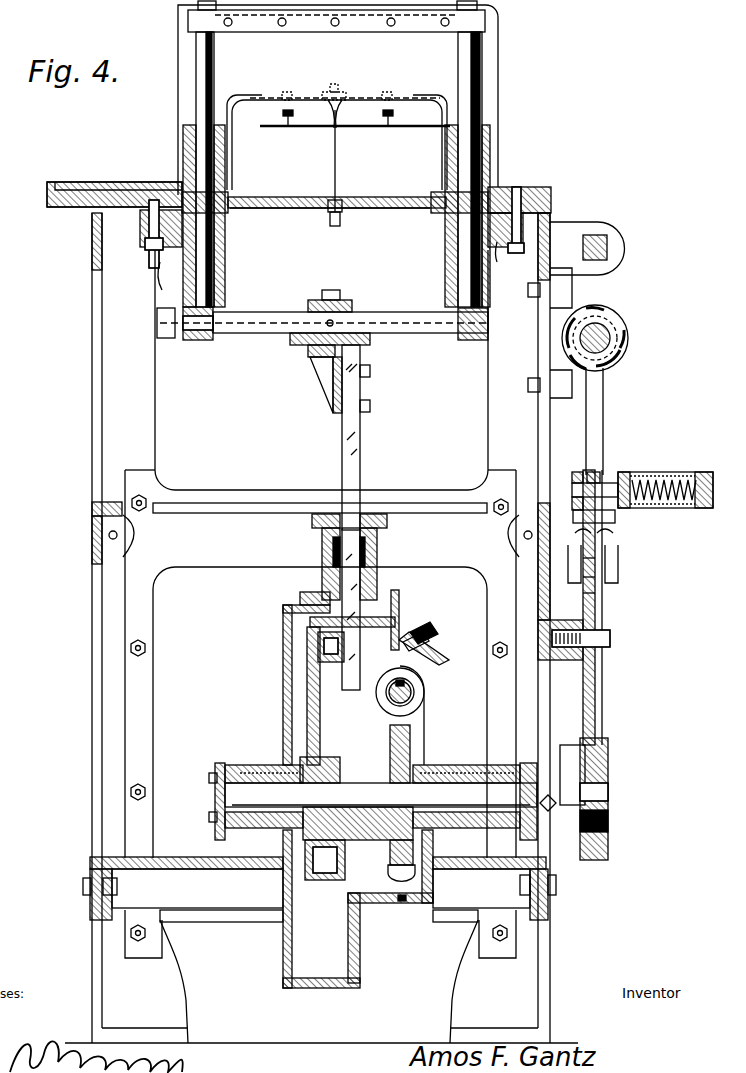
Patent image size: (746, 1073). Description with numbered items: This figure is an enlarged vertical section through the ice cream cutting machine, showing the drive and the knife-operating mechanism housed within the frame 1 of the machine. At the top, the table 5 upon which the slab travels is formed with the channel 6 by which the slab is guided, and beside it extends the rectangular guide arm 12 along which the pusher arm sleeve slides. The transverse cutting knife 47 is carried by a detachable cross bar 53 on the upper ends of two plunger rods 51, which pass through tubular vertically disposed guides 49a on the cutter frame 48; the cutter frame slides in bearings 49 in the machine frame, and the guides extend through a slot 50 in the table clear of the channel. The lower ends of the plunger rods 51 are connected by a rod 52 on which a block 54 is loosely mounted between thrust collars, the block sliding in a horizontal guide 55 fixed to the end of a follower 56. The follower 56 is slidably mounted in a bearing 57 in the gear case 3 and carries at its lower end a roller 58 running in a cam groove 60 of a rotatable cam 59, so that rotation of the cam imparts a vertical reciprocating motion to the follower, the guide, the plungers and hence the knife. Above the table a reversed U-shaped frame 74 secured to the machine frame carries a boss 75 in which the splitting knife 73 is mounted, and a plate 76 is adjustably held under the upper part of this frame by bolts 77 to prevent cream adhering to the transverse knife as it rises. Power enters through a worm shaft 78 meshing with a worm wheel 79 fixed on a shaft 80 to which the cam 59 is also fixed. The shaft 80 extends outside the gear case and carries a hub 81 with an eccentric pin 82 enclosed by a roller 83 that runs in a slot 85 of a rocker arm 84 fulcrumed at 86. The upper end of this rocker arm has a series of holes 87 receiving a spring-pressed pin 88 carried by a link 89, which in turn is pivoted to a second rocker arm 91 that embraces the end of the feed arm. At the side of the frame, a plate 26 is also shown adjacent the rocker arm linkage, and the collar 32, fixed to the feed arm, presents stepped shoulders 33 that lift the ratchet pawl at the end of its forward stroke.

The frame 1 is at (172, 1004).
The gear case 3 is at (282, 690).
The table 5 is at (68, 190).
The channel 6 is at (325, 208).
The guide arm 12 is at (607, 250).
The frame plate 26 is at (545, 359).
The collar 32 is at (610, 328).
The step or shoulder 33 is at (568, 333).
The knife 47 is at (372, 92).
The cutter frame 48 is at (162, 262).
The bearings 49 is at (150, 235).
The vertically disposed guide 49a is at (226, 262).
The slot 50 is at (236, 208).
The plunger rods 51 is at (200, 98).
The rod 52 is at (240, 338).
The cross bar 53 is at (318, 30).
The block 54 is at (348, 308).
The horizontal guide 55 is at (312, 360).
The follower 56 is at (358, 438).
The bearing 57 is at (374, 560).
The roller 58 is at (312, 630).
The cam 59 is at (310, 730).
The cam groove 60 is at (318, 644).
The splitting knife 73 is at (337, 152).
The reversed U-shaped frame 74 is at (438, 150).
The boss 75 is at (330, 112).
The plate 76 is at (268, 130).
The bolts 77 is at (285, 112).
The worm shaft 78 is at (422, 690).
The worm wheel 79 is at (410, 740).
The shaft 80 is at (373, 798).
The hub 81 is at (568, 750).
The eccentric pin 82 is at (608, 786).
The roller 83 is at (600, 800).
The rocker arm 84 is at (596, 702).
The slot 85 is at (608, 818).
The fulcrum 86 is at (598, 636).
The holes 87 is at (592, 597).
The spring-pressed pin 88 is at (606, 482).
The link 89 is at (586, 518).
The rocker arm 91 is at (590, 430).